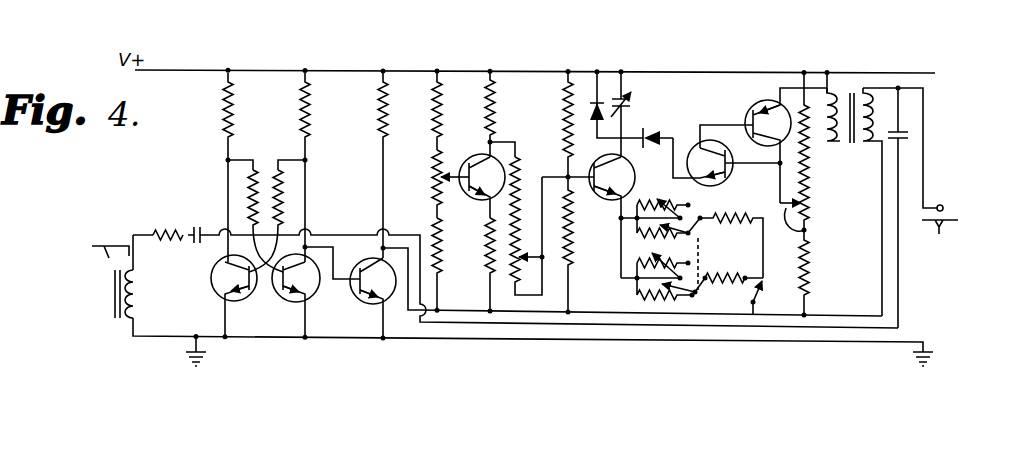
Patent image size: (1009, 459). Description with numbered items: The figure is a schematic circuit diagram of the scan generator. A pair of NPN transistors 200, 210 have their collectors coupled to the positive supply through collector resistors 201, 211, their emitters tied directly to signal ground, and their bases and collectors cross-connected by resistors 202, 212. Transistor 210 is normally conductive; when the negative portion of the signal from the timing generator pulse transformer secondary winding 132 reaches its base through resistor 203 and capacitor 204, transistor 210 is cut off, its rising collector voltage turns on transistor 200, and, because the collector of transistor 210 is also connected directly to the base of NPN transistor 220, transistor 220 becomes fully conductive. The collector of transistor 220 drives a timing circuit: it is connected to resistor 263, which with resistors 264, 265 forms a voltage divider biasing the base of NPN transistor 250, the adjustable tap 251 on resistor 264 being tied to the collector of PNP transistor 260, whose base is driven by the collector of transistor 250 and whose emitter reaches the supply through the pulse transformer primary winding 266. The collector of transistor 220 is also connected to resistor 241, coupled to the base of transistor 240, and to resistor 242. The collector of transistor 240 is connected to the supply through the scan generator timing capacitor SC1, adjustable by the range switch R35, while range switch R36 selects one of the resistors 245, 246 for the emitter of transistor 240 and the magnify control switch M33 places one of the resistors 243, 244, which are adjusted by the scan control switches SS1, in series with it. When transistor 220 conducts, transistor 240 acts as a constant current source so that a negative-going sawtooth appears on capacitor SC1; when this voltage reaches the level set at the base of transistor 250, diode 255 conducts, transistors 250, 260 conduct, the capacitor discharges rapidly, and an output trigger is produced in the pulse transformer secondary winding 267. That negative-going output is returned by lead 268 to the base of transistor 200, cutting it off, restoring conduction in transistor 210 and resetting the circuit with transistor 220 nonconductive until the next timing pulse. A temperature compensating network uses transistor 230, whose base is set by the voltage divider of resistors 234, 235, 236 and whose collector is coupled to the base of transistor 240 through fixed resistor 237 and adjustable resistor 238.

The timing generator pulse transformer secondary winding 132 is at (138, 280).
The NPN transistor 200 is at (240, 300).
The collector resistor 201 is at (232, 112).
The cross-connecting resistor 202 is at (254, 168).
The resistor 203 is at (170, 230).
The capacitor 204 is at (200, 226).
The NPN transistor 210 is at (312, 298).
The collector resistor 211 is at (312, 109).
The cross-connecting resistor 212 is at (284, 194).
The NPN transistor 220 is at (392, 305).
The transistor 230 is at (472, 154).
The resistor 234 is at (437, 130).
The resistor 235 is at (437, 190).
The resistor 236 is at (437, 242).
The fixed resistor 237 is at (516, 170).
The adjustable resistor 238 is at (527, 263).
The transistor 240 is at (604, 198).
The resistor 241 is at (569, 260).
The resistor 242 is at (568, 113).
The adjustable resistor 243 is at (655, 195).
The adjustable resistor 244 is at (660, 233).
The resistor 245 is at (726, 216).
The resistor 246 is at (748, 300).
The NPN transistor 250 is at (732, 178).
The adjustable tap 251 is at (806, 231).
The diode 255 is at (685, 134).
The PNP transistor 260 is at (760, 100).
The resistor 263 is at (810, 268).
The resistor 264 is at (812, 199).
The resistor 265 is at (822, 148).
The pulse transformer primary winding 266 is at (836, 86).
The pulse transformer secondary winding 267 is at (866, 90).
The lead 268 is at (898, 284).
The range switch R35 is at (634, 95).
The scan generator timing capacitor SC1 is at (612, 116).
The magnify control switch M33 is at (706, 272).
The range switch R36 is at (768, 302).
The scan control switch SS1 is at (621, 270).